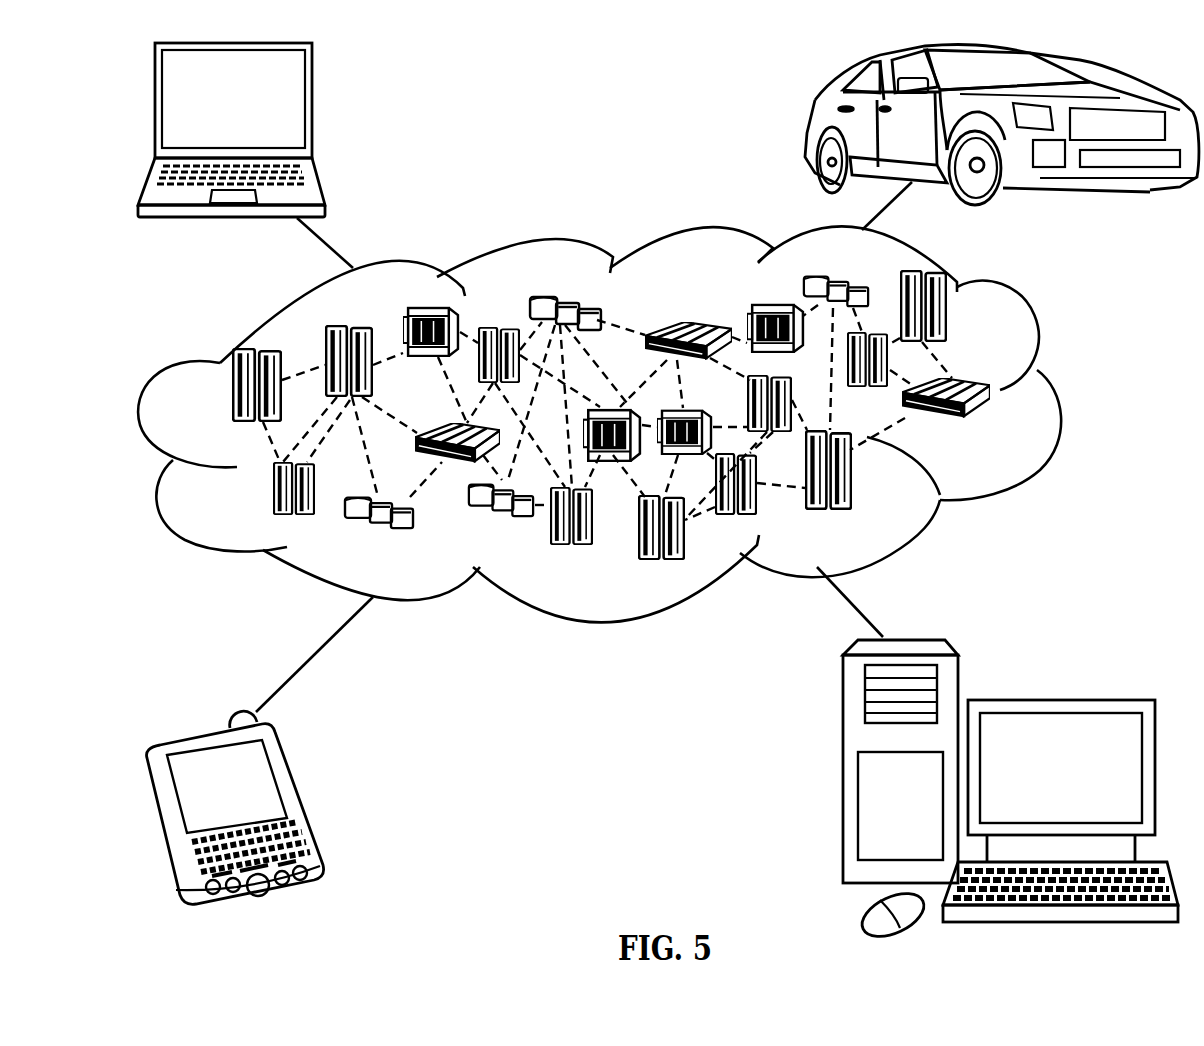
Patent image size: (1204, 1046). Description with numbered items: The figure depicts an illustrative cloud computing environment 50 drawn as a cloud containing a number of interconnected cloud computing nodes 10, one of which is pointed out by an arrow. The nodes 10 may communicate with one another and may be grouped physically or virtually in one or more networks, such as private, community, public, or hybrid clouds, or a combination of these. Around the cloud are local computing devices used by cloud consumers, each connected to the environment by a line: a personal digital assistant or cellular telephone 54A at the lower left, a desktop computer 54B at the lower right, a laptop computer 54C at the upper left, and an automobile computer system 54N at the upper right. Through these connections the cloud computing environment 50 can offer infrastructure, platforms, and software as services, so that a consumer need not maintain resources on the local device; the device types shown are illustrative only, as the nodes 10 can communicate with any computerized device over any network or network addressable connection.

The cloud computing environment 50 is at (1057, 397).
The cloud computing node 10 is at (1000, 431).
The personal digital assistant (PDA) or cellular telephone 54A is at (298, 800).
The desktop computer 54B is at (1058, 700).
The laptop computer 54C is at (312, 110).
The automobile computer system 54N is at (810, 124).